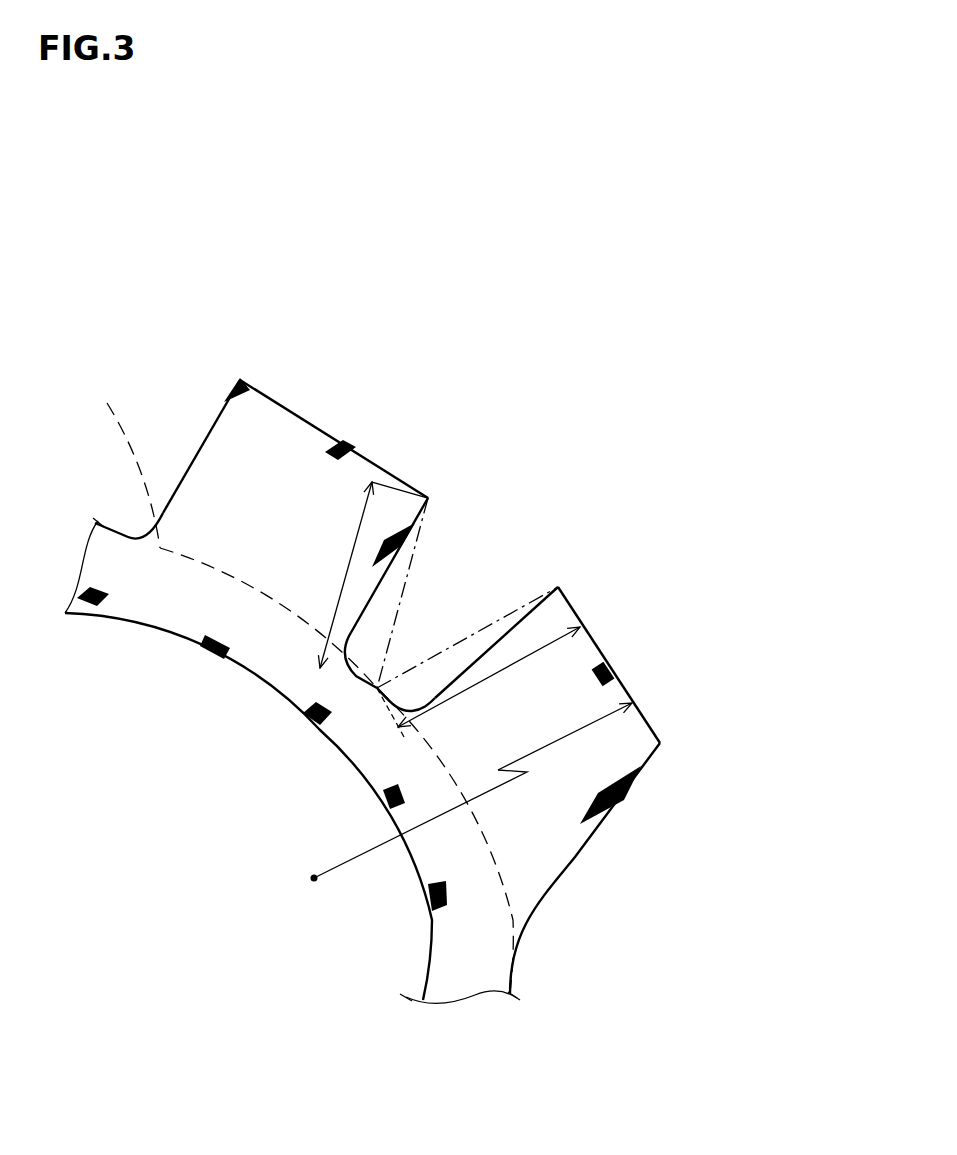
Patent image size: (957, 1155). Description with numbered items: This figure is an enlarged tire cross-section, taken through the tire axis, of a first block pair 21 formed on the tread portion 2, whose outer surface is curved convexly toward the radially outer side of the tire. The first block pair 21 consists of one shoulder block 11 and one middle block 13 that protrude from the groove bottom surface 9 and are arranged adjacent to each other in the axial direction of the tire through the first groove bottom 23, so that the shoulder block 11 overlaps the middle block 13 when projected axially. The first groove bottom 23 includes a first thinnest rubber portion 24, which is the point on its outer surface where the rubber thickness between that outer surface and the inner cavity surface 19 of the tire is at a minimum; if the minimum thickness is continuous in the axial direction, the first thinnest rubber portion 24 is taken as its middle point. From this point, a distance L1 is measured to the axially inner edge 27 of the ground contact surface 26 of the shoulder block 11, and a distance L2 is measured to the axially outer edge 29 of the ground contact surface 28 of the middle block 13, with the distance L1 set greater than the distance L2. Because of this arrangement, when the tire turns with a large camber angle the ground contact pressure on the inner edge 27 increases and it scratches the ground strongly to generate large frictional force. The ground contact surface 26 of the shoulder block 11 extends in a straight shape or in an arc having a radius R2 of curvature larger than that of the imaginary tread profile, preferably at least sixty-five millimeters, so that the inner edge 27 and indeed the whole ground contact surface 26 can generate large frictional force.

The tread portion 2 is at (175, 398).
The groove bottom surface 9 is at (302, 684).
The shoulder block 11 is at (597, 640).
The middle block 13 is at (352, 445).
The inner cavity surface 19 is at (325, 733).
The first block pair 21 is at (212, 365).
The first groove bottom 23 is at (378, 688).
The first thinnest rubber portion 24 is at (423, 595).
The ground contact surface of the shoulder block 26 is at (647, 718).
The axially inner edge of the ground contact surface of the shoulder block 27 is at (558, 587).
The ground contact surface of the middle block 28 is at (308, 423).
The axially outer edge of the ground contact surface of the middle block 29 is at (428, 498).
The distance L1 is at (497, 673).
The distance L2 is at (343, 580).
The radius R2 of curvature R2 is at (472, 792).